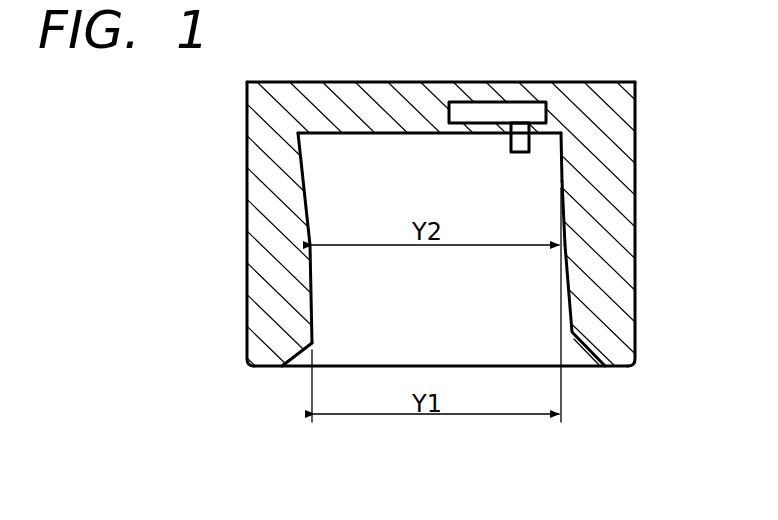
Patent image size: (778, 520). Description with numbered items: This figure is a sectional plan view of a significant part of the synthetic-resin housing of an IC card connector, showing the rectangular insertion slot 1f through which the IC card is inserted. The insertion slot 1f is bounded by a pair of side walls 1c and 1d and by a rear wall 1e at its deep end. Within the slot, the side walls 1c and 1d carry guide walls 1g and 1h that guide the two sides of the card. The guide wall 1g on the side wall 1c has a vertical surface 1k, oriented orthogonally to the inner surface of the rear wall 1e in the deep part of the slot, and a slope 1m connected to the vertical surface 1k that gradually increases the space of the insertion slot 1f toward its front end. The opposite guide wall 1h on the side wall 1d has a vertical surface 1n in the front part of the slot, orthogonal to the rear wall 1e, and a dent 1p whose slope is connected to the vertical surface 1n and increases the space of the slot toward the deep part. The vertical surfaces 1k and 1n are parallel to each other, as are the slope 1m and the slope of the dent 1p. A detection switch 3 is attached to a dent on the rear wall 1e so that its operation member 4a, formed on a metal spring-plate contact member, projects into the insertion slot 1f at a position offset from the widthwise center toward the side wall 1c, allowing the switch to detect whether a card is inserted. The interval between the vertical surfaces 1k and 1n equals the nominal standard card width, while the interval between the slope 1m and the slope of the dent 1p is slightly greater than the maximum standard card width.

The side wall 1c is at (637, 179).
The side wall 1d is at (247, 213).
The rear wall 1e is at (387, 82).
The insertion slot 1f is at (515, 341).
The guide wall 1g is at (560, 181).
The guide wall 1h is at (307, 210).
The vertical surface 1k is at (560, 150).
The slope 1m is at (571, 312).
The vertical surface 1n is at (312, 322).
The dent 1p is at (304, 172).
The detection switch 3 is at (498, 103).
The operation member 4a is at (510, 151).